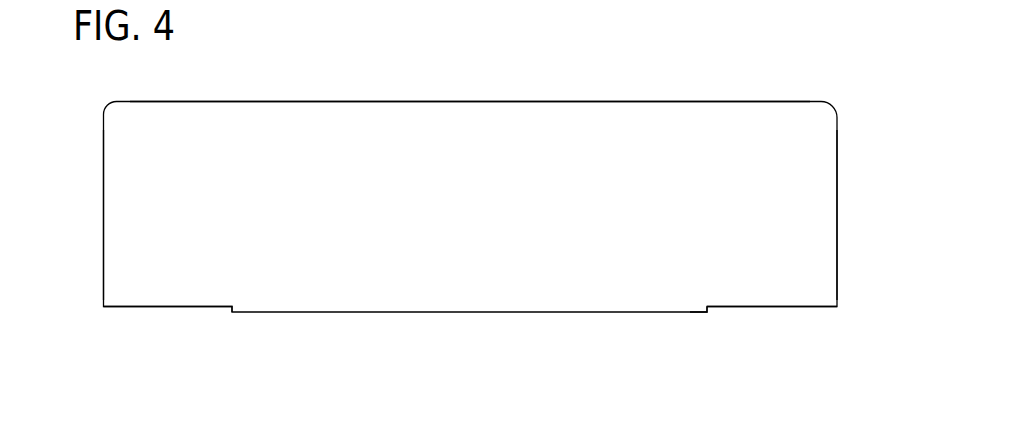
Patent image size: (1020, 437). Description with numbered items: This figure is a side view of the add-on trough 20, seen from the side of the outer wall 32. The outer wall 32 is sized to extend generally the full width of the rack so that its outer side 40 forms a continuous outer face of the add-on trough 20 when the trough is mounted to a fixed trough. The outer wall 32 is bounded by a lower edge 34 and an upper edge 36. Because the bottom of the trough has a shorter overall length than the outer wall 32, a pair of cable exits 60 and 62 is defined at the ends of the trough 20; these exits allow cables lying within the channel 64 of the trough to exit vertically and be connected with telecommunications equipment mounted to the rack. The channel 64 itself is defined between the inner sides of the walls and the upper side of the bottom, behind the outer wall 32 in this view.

The add-on trough 20 is at (95, 92).
The outer wall 32 is at (144, 219).
The lower edge 34 is at (813, 308).
The upper edge 36 is at (607, 102).
The outer side 40 is at (395, 229).
The cable exit 60 is at (161, 318).
The cable exit 62 is at (751, 322).
The channel 64 is at (847, 196).